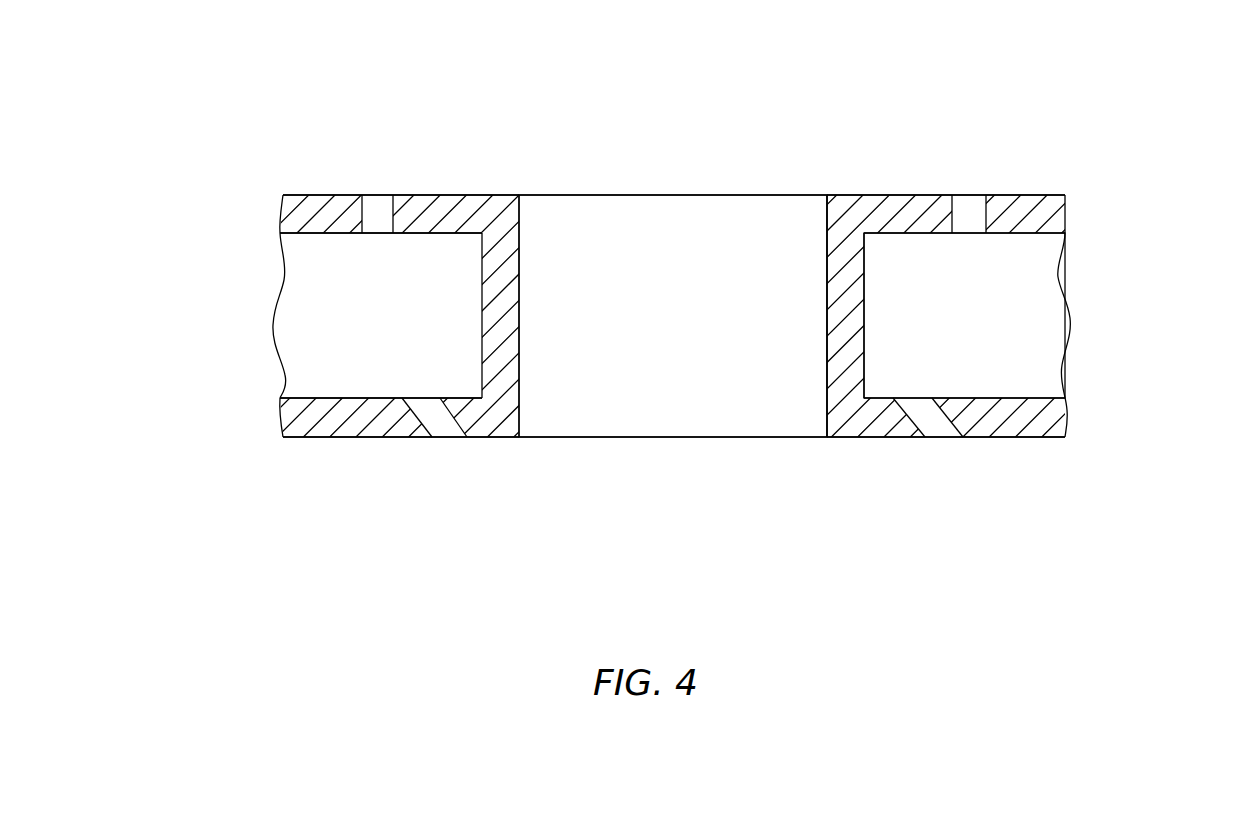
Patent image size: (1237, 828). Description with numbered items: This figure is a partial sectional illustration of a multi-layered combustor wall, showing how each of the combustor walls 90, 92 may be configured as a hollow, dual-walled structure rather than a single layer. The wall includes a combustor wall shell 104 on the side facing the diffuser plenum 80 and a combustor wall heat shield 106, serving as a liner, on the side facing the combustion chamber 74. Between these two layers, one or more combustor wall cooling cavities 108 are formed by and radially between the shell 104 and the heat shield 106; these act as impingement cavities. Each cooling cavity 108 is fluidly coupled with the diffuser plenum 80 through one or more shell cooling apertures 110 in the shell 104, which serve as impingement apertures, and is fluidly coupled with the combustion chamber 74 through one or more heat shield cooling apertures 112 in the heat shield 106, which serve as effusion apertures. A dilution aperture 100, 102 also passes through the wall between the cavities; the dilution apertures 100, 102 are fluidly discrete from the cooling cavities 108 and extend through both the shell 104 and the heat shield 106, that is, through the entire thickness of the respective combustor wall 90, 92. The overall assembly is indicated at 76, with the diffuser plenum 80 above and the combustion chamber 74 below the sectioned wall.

The combustion chamber 74 is at (671, 571).
The substrate 76 is at (1093, 118).
The diffuser plenum 80 is at (706, 72).
The combustor wall 90 is at (916, 292).
The combustor wall 92 is at (1085, 183).
The dilution aperture 100 is at (682, 289).
The dilution aperture 102 is at (712, 212).
The combustor wall shell 104 is at (293, 216).
The combustor wall heat shield 106 is at (288, 413).
The combustor wall cooling cavity 108 is at (393, 333).
The shell cooling aperture 110 is at (378, 208).
The heat shield cooling aperture 112 is at (438, 422).